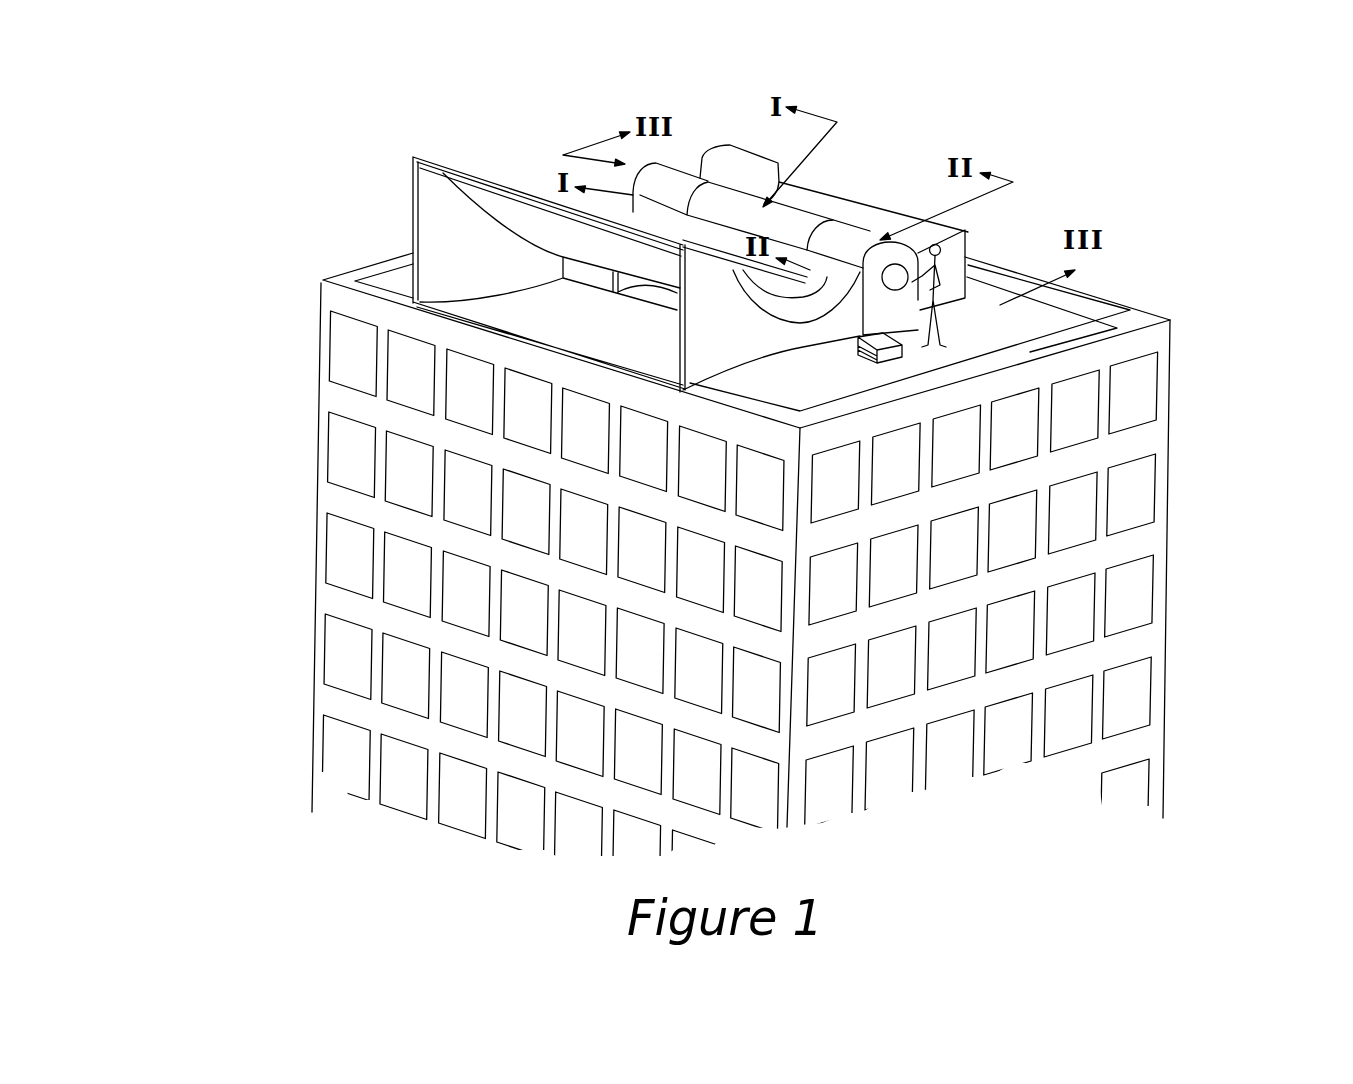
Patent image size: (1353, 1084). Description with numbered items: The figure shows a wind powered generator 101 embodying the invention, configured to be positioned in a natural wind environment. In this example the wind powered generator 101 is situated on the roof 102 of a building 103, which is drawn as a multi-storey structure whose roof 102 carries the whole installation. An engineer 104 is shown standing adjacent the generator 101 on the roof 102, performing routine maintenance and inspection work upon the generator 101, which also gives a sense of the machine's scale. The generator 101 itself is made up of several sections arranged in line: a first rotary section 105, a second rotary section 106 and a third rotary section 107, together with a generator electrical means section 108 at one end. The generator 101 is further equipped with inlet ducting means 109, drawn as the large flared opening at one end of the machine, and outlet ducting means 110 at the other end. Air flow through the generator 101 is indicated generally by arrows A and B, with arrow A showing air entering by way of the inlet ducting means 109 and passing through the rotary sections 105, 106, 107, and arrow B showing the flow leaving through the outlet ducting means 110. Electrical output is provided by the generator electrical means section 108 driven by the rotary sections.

The wind powered generator 101 is at (563, 155).
The roof 102 is at (962, 348).
The building 103 is at (313, 555).
The engineer 104 is at (1040, 317).
The first rotary section 105 is at (665, 176).
The second rotary section 106 is at (837, 197).
The third rotary section 107 is at (878, 240).
The generator electrical means section 108 is at (900, 280).
The inlet ducting means 109 is at (405, 203).
The outlet ducting means 110 is at (712, 165).
The arrow A is at (568, 304).
The arrow B is at (837, 197).